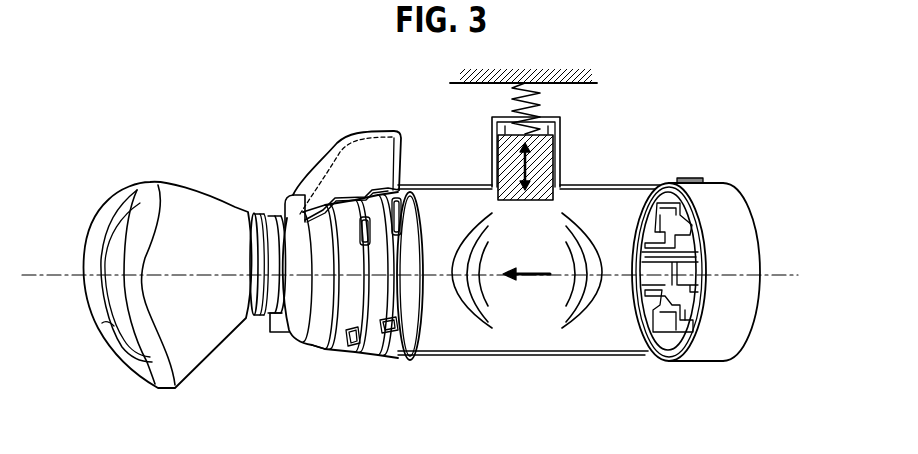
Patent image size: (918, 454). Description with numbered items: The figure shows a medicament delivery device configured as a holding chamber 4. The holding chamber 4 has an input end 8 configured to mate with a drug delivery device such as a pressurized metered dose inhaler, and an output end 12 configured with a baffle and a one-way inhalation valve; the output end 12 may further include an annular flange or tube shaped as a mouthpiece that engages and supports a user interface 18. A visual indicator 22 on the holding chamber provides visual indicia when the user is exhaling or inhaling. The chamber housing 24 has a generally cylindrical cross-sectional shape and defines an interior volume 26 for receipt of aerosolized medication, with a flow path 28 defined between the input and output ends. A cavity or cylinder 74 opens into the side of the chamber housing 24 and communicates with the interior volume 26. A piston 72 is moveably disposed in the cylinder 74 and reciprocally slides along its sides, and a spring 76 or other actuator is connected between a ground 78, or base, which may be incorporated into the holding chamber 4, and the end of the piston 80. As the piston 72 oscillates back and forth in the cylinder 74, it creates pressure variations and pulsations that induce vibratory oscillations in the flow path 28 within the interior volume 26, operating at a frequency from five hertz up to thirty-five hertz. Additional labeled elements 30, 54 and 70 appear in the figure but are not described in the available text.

The holding chamber 4 is at (457, 379).
The input end 8 is at (762, 193).
The output end 12 is at (287, 344).
The user interface 18 is at (192, 197).
The visual indicator 22 is at (360, 150).
The chamber housing 24 is at (404, 355).
The interior volume 26 is at (630, 206).
The flow path 28 is at (530, 279).
The end cap 30 is at (712, 353).
The longitudinal axis 54 is at (782, 274).
The actuator assembly 70 is at (518, 128).
The piston 72 is at (550, 128).
The cylinder 74 is at (560, 162).
The spring 76 is at (542, 97).
The ground 78 is at (580, 82).
The end of the piston 80 is at (506, 112).